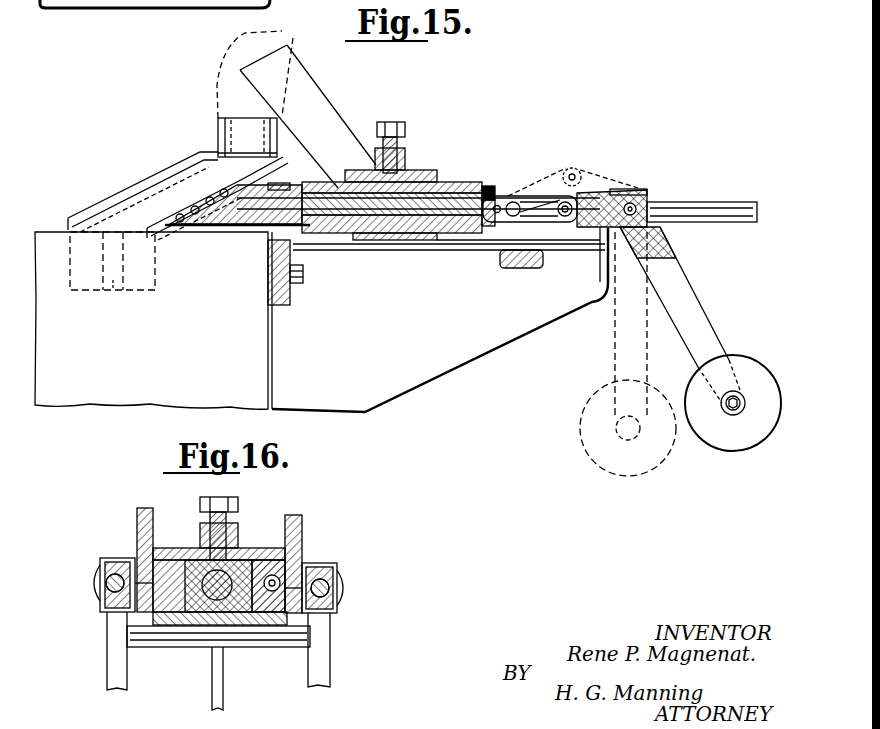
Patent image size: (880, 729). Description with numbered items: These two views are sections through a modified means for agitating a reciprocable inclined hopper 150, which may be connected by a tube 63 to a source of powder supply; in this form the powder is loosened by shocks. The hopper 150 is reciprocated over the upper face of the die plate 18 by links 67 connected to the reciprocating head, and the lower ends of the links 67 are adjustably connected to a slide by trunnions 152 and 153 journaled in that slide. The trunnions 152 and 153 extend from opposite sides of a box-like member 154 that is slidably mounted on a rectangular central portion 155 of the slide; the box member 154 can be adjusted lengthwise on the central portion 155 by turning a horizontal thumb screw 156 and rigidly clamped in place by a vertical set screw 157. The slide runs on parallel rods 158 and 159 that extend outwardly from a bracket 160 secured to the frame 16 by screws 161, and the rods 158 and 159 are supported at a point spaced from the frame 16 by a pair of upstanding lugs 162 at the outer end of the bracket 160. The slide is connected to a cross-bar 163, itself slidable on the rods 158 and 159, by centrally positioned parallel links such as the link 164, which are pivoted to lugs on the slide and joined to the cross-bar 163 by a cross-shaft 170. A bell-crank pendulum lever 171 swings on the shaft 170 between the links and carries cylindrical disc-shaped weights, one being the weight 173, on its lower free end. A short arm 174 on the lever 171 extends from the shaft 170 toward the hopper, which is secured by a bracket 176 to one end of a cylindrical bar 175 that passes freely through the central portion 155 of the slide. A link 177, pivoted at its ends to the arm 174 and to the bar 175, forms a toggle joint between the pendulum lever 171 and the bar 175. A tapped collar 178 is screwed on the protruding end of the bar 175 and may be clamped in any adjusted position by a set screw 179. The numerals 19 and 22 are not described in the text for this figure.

In FIG. 15, the frame 16 is at (62, 420).
In FIG. 15, the die plate 18 is at (146, 266).
In FIG. 15, the opening 19 is at (112, 290).
In FIG. 15, the frame plate 22 is at (114, 8).
In FIG. 15, the tube 63 is at (220, 86).
In FIG. 15, the links 67 is at (305, 92).
In FIG. 16, the links 67 is at (137, 525).
In FIG. 15, the reciprocable inclined hopper 150 is at (138, 193).
In FIG. 15, the trunnion 152 is at (407, 248).
In FIG. 16, the trunnion 152 is at (120, 600).
In FIG. 16, the trunnion 153 is at (337, 567).
In FIG. 15, the box-like member 154 is at (410, 172).
In FIG. 16, the box-like member 154 is at (188, 546).
In FIG. 15, the rectangular central portion 155 is at (448, 185).
In FIG. 16, the rectangular central portion 155 is at (195, 598).
In FIG. 16, the horizontal thumb screw 156 is at (290, 560).
In FIG. 15, the vertical set screw 157 is at (388, 122).
In FIG. 16, the vertical set screw 157 is at (232, 506).
In FIG. 15, the rod 158 is at (725, 205).
In FIG. 16, the rod 158 is at (108, 581).
In FIG. 16, the rod 159 is at (340, 576).
In FIG. 15, the bracket 160 is at (268, 280).
In FIG. 16, the bracket 160 is at (318, 642).
In FIG. 15, the screws 161 is at (303, 283).
In FIG. 15, the upstanding lugs 162 is at (577, 258).
In FIG. 16, the upstanding lugs 162 is at (96, 590).
In FIG. 15, the cross-bar 163 is at (648, 193).
In FIG. 15, the link 164 is at (523, 196).
In FIG. 15, the cross-shaft 170 is at (632, 191).
In FIG. 15, the bell-crank pendulum lever 171 is at (678, 287).
In FIG. 16, the bell-crank pendulum lever 171 is at (223, 670).
In FIG. 15, the cylindrical disc-shaped weight 173 is at (738, 356).
In FIG. 15, the short arm 174 is at (597, 195).
In FIG. 15, the cylindrical bar 175 is at (353, 210).
In FIG. 16, the cylindrical bar 175 is at (210, 600).
In FIG. 15, the bracket 176 is at (207, 236).
In FIG. 15, the link 177 is at (562, 182).
In FIG. 15, the tapped collar 178 is at (498, 188).
In FIG. 15, the set screw 179 is at (488, 196).